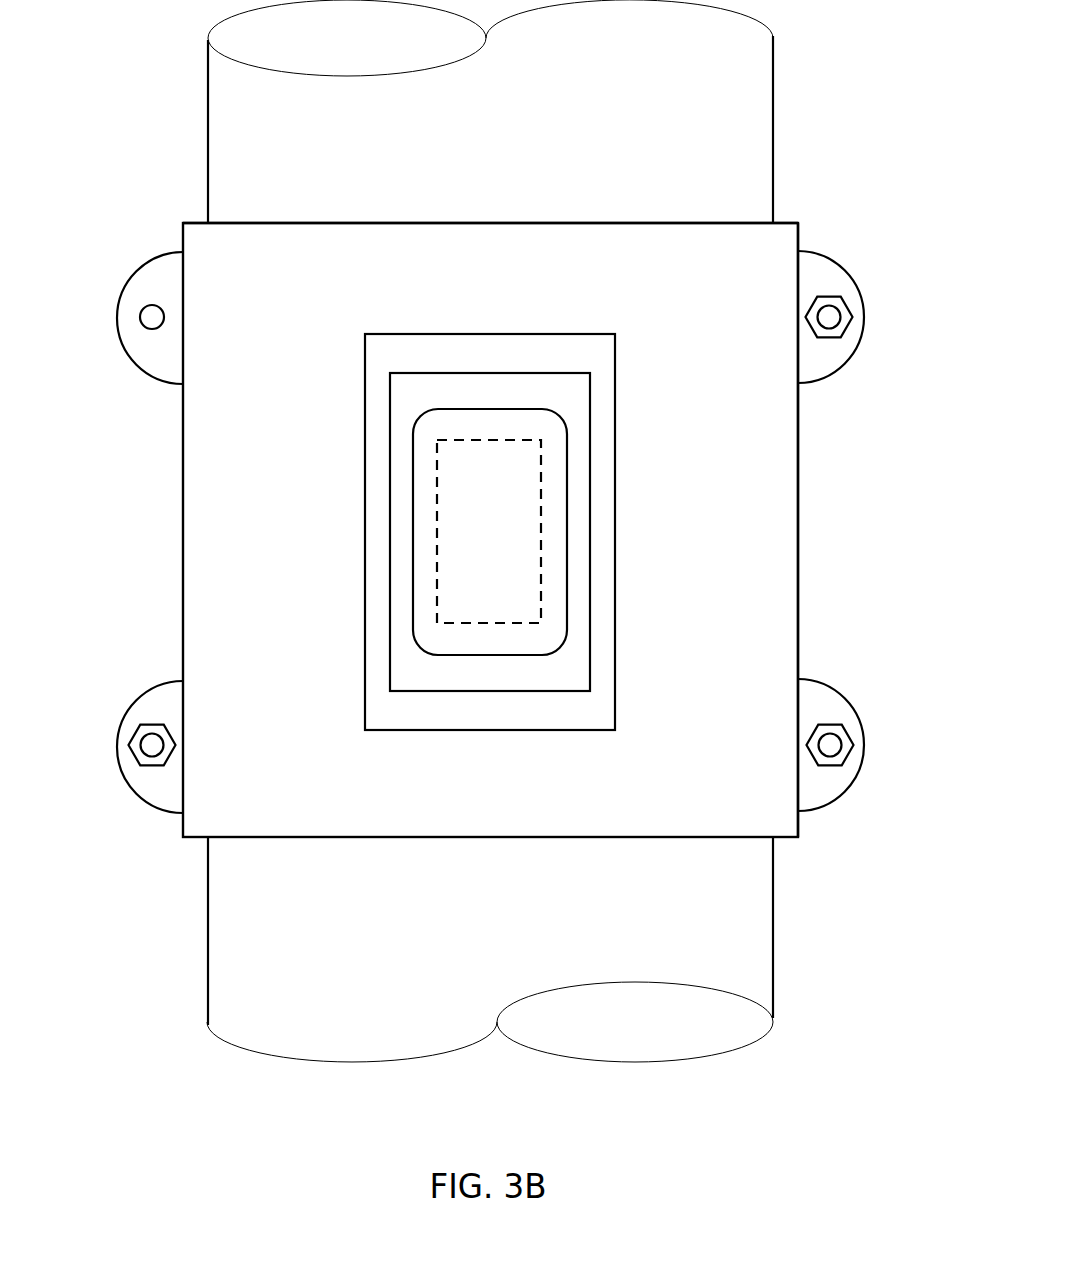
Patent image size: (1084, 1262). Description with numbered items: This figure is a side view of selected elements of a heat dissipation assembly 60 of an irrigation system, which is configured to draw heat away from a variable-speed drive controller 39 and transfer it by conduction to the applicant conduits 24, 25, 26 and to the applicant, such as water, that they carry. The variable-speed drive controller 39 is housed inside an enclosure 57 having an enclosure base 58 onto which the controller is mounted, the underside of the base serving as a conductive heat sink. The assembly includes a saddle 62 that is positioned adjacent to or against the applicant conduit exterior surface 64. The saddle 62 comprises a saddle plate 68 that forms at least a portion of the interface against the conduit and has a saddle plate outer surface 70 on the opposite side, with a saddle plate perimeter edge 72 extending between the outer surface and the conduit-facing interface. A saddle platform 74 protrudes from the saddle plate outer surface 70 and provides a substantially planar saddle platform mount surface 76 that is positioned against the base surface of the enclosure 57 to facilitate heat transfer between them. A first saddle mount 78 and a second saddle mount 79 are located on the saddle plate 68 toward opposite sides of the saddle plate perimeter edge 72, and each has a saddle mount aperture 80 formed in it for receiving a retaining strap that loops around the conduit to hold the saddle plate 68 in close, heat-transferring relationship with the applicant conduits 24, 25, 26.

The applicant conduit 24 is at (575, 531).
The applicant conduit 25 is at (575, 531).
The applicant conduit 26 is at (575, 531).
The variable-speed drive controller 39 is at (462, 485).
The enclosure 57 is at (567, 478).
The enclosure base 58 is at (590, 396).
The heat dissipation assembly 60 is at (493, 446).
The saddle 62 is at (493, 511).
The applicant conduit exterior surface 64 is at (748, 931).
The saddle plate 68 is at (798, 608).
The saddle plate outer surface 70 is at (773, 660).
The saddle plate perimeter edge 72 is at (737, 223).
The saddle platform 74 is at (405, 730).
The saddle platform mount surface 76 is at (497, 541).
The first saddle mount 78 is at (150, 710).
The second saddle mount 79 is at (835, 710).
The saddle mount aperture 80 is at (147, 317).